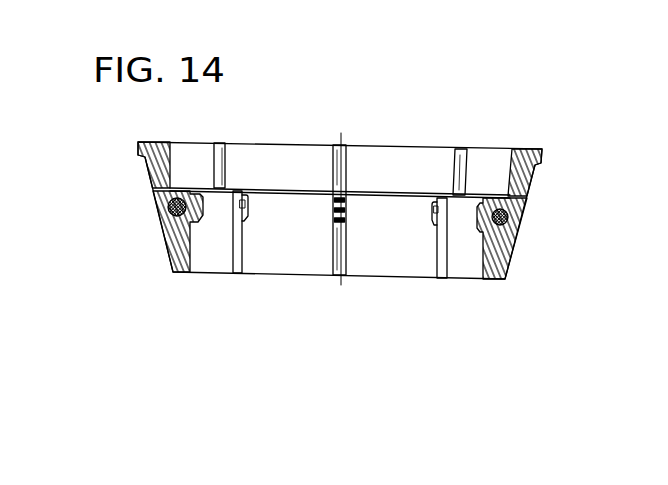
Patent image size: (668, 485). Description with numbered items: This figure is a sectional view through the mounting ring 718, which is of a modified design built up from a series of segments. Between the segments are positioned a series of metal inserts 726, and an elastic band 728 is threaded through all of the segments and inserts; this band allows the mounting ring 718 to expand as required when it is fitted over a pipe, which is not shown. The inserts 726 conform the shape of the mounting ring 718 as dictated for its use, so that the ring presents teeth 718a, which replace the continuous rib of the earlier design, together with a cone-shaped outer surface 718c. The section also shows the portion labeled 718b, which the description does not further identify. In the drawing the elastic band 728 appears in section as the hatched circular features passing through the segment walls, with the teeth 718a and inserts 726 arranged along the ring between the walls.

The mounting ring 718 is at (379, 146).
The teeth 718a is at (247, 210).
The right side wall 718b is at (513, 193).
The cone-shaped outer surface 718c is at (148, 168).
The metal inserts 726 is at (222, 150).
The elastic band 728 is at (182, 232).